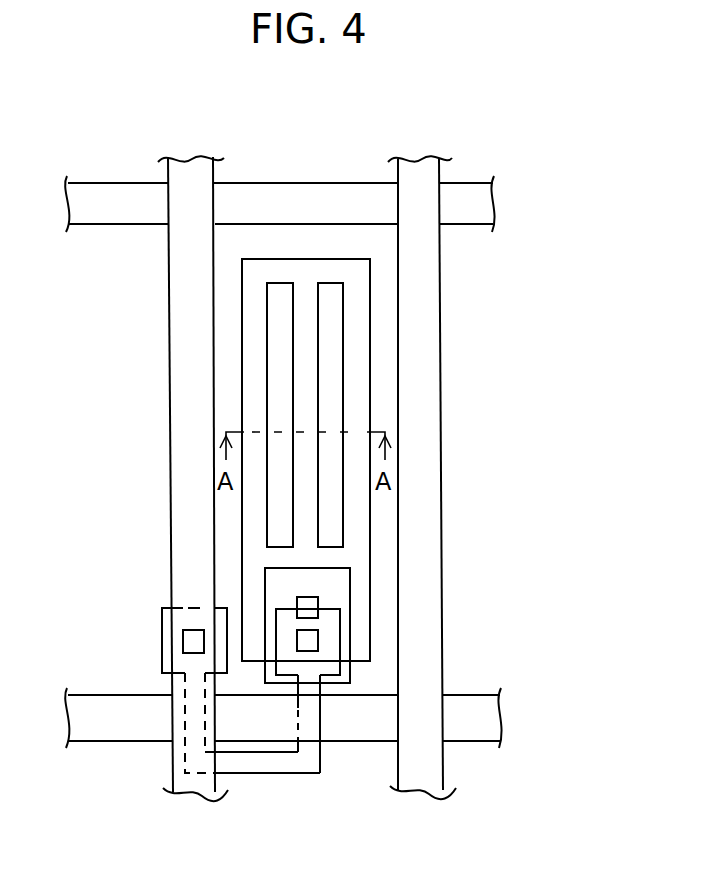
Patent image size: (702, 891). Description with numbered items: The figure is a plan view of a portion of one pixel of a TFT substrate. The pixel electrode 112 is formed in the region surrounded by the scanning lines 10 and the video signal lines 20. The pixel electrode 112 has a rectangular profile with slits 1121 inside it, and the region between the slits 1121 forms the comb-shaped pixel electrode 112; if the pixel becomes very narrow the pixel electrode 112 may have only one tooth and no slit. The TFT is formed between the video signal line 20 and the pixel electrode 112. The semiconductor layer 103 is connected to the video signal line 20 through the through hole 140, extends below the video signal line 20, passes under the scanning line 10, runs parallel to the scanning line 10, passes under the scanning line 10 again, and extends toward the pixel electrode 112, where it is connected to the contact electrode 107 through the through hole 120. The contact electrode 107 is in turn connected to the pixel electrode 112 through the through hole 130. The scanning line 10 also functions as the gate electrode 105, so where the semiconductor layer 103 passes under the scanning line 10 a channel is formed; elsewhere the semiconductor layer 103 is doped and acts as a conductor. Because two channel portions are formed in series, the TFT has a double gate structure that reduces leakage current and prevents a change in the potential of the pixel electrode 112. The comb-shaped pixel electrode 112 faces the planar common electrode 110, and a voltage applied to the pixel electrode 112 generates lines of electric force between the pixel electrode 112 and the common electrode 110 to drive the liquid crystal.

The scanning line 10 is at (487, 205).
The video signal line 20 is at (418, 165).
The common electrode 110 is at (228, 400).
The pixel electrode 112 is at (357, 400).
The slit 1121 is at (332, 347).
The contact electrode 107 is at (352, 675).
The through hole 120 is at (313, 640).
The through hole 130 is at (313, 603).
The gate electrode 105 is at (310, 717).
The semiconductor layer 103 is at (258, 765).
The through hole 140 is at (187, 640).